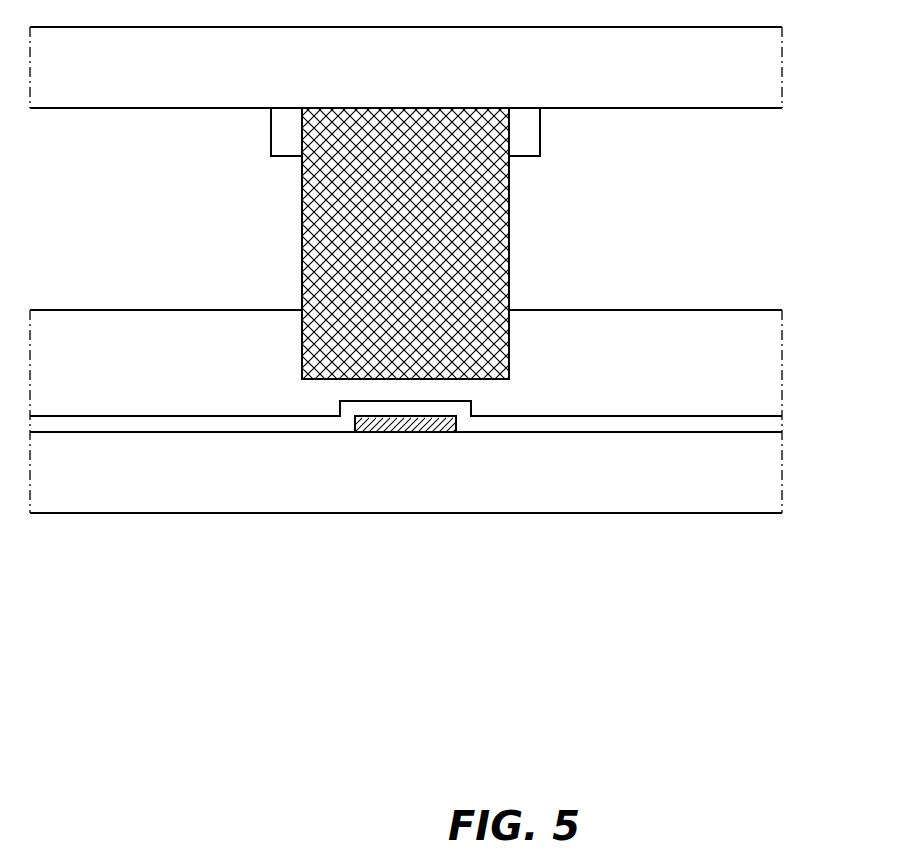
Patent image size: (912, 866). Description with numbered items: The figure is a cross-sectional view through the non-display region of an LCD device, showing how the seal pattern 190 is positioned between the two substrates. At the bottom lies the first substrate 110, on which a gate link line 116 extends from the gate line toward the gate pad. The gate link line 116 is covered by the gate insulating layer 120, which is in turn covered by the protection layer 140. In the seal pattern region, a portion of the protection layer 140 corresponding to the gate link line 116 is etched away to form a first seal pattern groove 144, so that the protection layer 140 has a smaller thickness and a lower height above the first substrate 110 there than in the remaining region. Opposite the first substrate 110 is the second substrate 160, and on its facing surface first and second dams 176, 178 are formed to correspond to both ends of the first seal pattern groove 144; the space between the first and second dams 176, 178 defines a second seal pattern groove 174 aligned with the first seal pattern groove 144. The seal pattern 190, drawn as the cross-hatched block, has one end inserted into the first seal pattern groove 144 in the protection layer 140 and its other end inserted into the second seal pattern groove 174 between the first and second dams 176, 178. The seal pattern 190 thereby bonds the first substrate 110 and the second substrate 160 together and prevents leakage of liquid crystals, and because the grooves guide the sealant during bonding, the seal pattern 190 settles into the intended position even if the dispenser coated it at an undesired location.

The first substrate 110 is at (704, 486).
The gate link line 116 is at (393, 434).
The gate insulating layer 120 is at (521, 422).
The protection layer 140 is at (667, 332).
The first seal pattern groove 144 is at (452, 349).
The second substrate 160 is at (703, 81).
The second seal pattern groove 174 is at (368, 140).
The first dam 176 is at (529, 133).
The second dam 178 is at (281, 133).
The seal pattern 190 is at (497, 219).